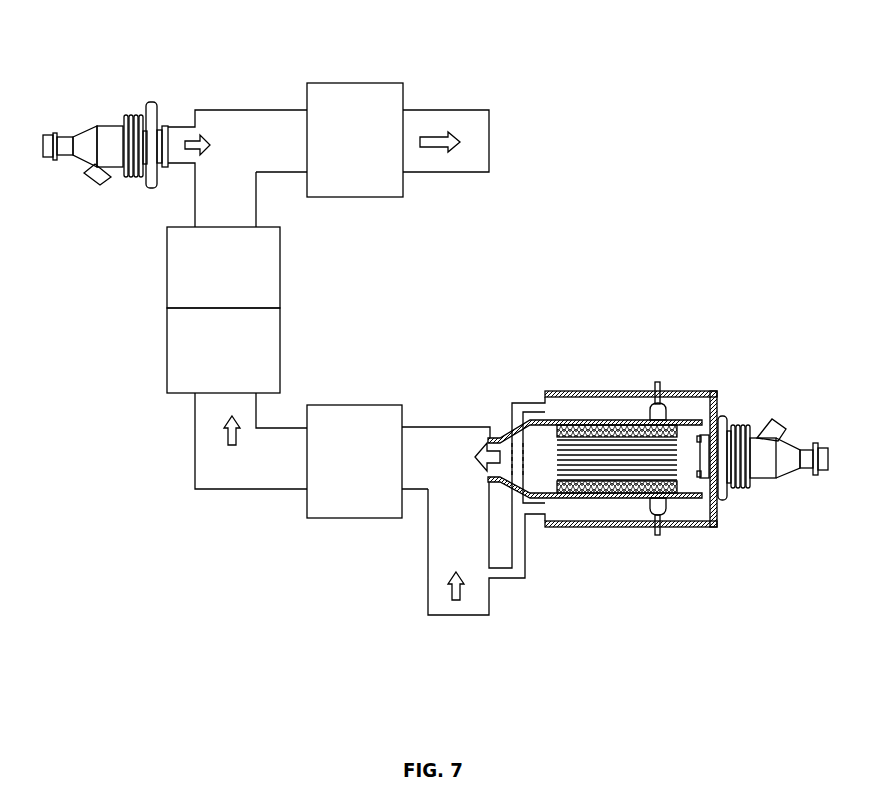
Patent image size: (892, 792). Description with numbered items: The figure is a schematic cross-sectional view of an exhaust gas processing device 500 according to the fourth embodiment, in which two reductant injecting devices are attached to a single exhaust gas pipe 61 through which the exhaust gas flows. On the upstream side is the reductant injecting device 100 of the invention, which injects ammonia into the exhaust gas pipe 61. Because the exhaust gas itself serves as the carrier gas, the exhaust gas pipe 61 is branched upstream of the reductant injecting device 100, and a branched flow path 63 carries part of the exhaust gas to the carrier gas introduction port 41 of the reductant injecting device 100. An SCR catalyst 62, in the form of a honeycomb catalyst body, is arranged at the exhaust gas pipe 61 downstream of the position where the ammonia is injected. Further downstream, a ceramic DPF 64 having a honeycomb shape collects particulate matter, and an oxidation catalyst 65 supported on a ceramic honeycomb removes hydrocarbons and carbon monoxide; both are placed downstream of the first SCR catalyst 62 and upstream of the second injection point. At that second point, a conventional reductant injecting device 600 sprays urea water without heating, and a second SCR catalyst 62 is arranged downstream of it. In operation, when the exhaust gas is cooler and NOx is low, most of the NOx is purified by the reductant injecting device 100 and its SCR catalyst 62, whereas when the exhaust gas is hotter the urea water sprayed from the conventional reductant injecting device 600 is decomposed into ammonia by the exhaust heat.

The exhaust gas processing device 500 is at (442, 702).
The conventional reductant injecting device 600 is at (122, 186).
The SCR catalyst 62 is at (353, 127).
The oxidation catalyst 65 is at (200, 280).
The DPF 64 is at (200, 359).
The exhaust gas pipe 61 is at (449, 440).
The branched flow path 63 is at (518, 577).
The reductant injecting device 100 is at (630, 530).
The carrier gas introduction port 41 is at (549, 403).